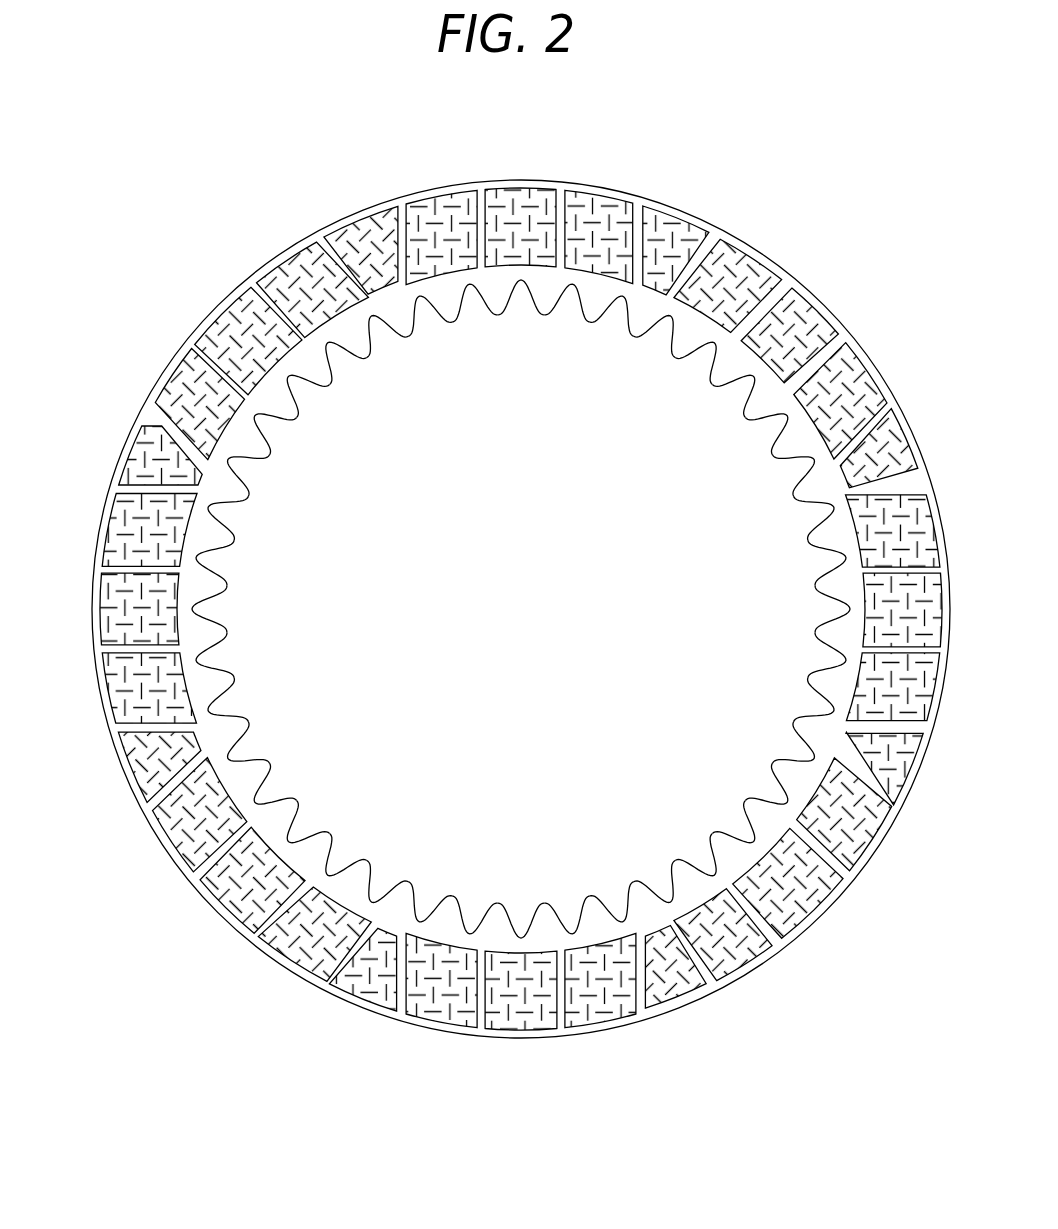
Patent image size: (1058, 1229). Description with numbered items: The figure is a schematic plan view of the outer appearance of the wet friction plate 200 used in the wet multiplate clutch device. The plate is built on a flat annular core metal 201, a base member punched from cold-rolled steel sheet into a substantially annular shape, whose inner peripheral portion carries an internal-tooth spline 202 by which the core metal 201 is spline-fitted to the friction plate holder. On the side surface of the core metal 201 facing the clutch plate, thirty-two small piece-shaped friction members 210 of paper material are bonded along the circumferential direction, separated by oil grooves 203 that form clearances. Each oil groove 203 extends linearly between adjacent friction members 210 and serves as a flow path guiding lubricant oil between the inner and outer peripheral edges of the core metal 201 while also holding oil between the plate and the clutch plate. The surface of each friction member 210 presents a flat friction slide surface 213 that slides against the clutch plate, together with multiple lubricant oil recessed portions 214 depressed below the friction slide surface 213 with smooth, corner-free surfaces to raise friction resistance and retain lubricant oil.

The wet friction plate 200 is at (176, 174).
The core metal 201 is at (519, 186).
The internal-tooth spline 202 is at (207, 598).
The oil groove 203 is at (134, 425).
The friction member 210 is at (277, 291).
The friction slide surface 213 is at (780, 273).
The lubricant oil recessed portion 214 is at (834, 324).